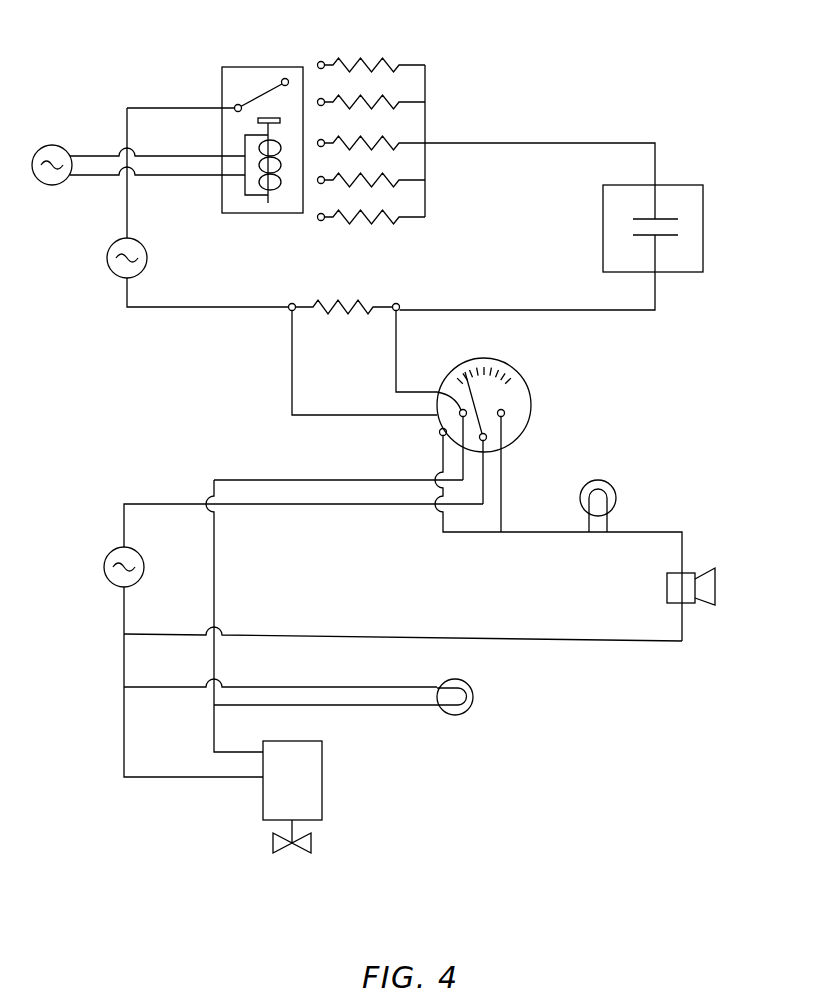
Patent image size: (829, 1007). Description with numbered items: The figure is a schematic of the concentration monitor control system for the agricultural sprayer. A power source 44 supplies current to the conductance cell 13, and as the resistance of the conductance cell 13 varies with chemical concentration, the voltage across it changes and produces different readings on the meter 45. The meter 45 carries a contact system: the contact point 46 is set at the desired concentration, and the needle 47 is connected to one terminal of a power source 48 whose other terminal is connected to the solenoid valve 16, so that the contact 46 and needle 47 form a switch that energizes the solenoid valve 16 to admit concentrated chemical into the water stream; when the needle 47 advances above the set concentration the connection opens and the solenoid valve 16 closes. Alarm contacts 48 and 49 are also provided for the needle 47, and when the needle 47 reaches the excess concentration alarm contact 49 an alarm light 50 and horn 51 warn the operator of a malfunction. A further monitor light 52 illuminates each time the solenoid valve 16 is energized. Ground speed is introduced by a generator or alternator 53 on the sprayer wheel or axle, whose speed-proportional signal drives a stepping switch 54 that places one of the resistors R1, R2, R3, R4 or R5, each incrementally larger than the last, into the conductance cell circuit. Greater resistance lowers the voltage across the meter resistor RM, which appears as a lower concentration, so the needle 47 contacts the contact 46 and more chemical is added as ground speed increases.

The conductance cell 13 is at (681, 185).
The solenoid valve 16 is at (322, 792).
The power source 44 is at (107, 258).
The meter 45 is at (529, 394).
The contact point 46 is at (439, 391).
The needle 47 is at (468, 368).
The power source 48 is at (110, 556).
The excess concentration alarm contact 49 is at (504, 414).
The alarm light 50 is at (617, 497).
The horn 51 is at (717, 567).
The light 52 is at (463, 715).
The generator or alternator 53 is at (50, 147).
The stepping switch 54 is at (247, 67).
The resistor R1 is at (372, 55).
The resistor R2 is at (372, 92).
The resistor R3 is at (372, 133).
The resistor R4 is at (372, 170).
The resistor R5 is at (372, 207).
The meter resistor RM is at (344, 298).